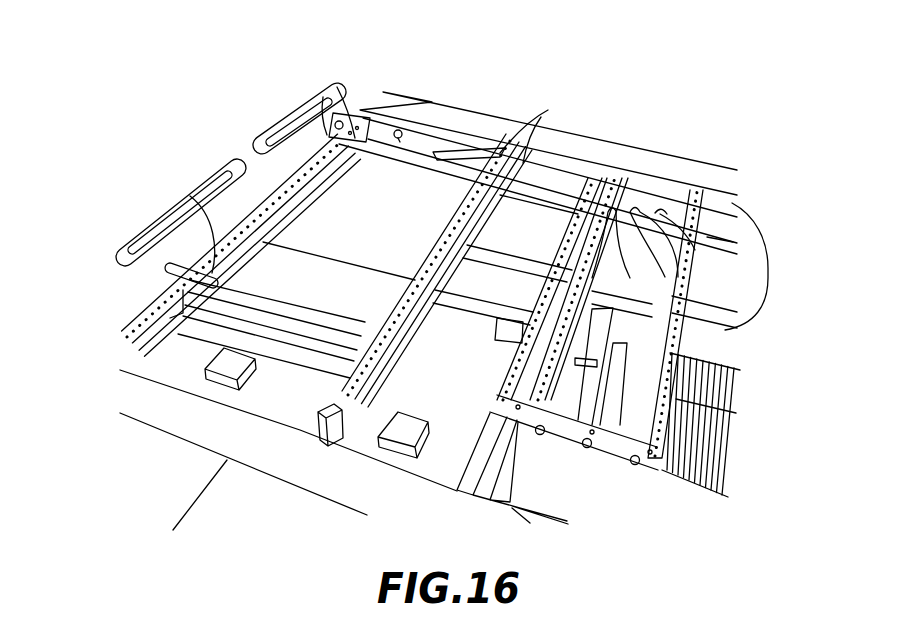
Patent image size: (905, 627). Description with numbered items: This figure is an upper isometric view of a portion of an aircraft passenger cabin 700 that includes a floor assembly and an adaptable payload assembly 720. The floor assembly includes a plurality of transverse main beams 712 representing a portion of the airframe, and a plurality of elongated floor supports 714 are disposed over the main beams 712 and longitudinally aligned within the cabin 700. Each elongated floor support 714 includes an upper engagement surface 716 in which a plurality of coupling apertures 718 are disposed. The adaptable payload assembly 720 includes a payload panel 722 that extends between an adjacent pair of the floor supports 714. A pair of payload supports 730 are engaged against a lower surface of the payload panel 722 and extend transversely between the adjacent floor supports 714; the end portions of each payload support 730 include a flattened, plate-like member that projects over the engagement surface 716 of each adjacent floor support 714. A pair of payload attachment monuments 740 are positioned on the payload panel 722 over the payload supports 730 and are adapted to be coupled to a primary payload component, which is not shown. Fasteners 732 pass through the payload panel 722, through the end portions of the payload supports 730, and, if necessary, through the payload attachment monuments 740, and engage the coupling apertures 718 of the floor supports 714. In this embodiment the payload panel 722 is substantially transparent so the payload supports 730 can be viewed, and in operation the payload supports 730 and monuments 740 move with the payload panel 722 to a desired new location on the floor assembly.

The aircraft passenger cabin 700 is at (574, 44).
The transverse main beams 712 is at (143, 394).
The elongated floor supports 714 is at (126, 352).
The upper engagement surface 716 is at (132, 327).
The coupling apertures 718 is at (168, 280).
The adaptable payload assembly 720 is at (502, 105).
The payload panel 722 is at (293, 204).
The payload supports 730 is at (364, 70).
The fasteners 732 is at (316, 125).
The payload attachment monuments 740 is at (293, 116).